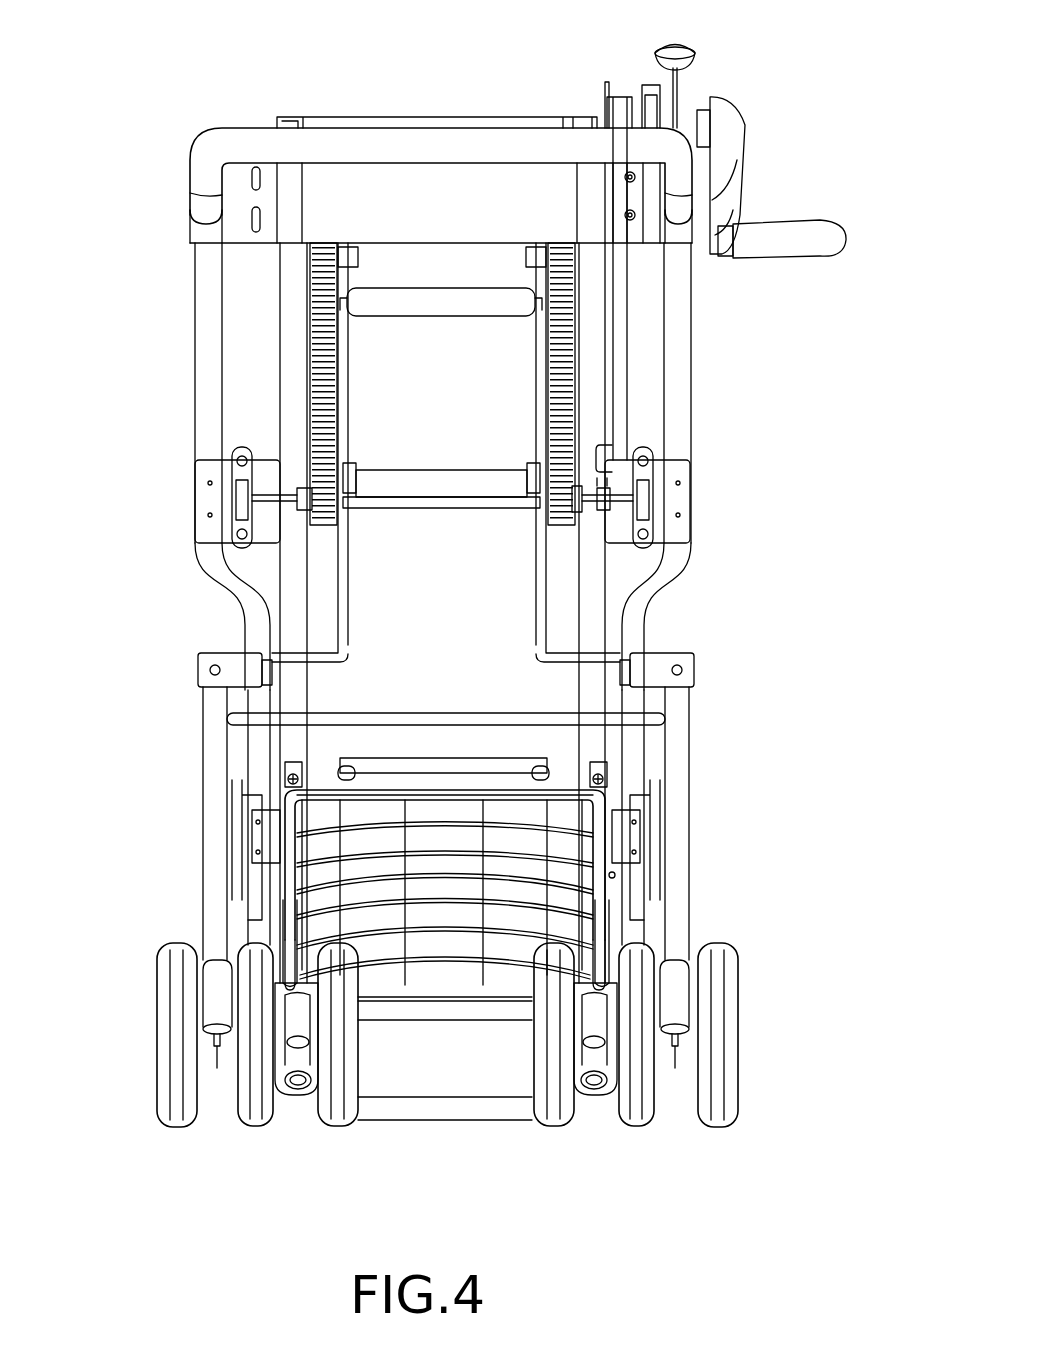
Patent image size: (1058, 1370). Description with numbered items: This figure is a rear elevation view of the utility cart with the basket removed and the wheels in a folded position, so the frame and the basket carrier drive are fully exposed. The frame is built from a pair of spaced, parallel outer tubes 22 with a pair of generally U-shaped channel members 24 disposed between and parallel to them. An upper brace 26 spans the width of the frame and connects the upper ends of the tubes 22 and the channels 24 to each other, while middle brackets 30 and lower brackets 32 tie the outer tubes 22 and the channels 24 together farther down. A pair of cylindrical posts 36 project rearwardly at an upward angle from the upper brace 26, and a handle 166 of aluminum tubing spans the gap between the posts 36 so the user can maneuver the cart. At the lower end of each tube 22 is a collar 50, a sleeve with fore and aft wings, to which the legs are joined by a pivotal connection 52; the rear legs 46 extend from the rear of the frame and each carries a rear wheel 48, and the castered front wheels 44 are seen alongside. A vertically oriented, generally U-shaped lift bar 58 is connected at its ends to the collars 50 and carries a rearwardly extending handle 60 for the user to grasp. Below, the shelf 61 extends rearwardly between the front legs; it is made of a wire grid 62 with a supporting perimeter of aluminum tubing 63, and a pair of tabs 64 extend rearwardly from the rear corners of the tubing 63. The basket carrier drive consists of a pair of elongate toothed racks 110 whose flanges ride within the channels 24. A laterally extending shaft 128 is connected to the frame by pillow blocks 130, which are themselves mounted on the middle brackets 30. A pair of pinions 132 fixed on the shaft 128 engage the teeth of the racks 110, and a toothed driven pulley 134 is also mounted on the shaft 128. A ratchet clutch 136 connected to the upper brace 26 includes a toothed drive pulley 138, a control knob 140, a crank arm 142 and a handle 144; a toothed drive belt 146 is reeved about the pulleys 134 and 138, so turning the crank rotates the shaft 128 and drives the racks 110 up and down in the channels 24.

The outer tubes 22 is at (198, 331).
The channel members 24 is at (290, 370).
The upper brace 26 is at (370, 190).
The middle brackets 30 is at (205, 479).
The lower brackets 32 is at (266, 826).
The cylindrical posts 36 is at (205, 197).
The castered front wheels 44 is at (338, 1115).
The rear legs 46 is at (212, 706).
The rear wheel 48 is at (167, 1041).
The collar 50 is at (220, 666).
The pivotal connection 52 is at (215, 652).
The lift bar 58 is at (536, 383).
The handle 60 is at (455, 318).
The shelf 61 is at (614, 876).
The wire grid 62 is at (372, 882).
The aluminum tubing 63 is at (604, 923).
The tabs 64 is at (290, 779).
The toothed racks 110 is at (315, 398).
The shaft 128 is at (470, 510).
The pillow blocks 130 is at (240, 506).
The pinions 132 is at (565, 480).
The toothed driven pulley 134 is at (600, 462).
The ratchet clutch 136 is at (650, 86).
The toothed drive pulley 138 is at (635, 102).
The control knob 140 is at (690, 50).
The crank arm 142 is at (735, 112).
The handle 144 is at (790, 230).
The toothed drive belt 146 is at (625, 296).
The handle 166 is at (420, 135).